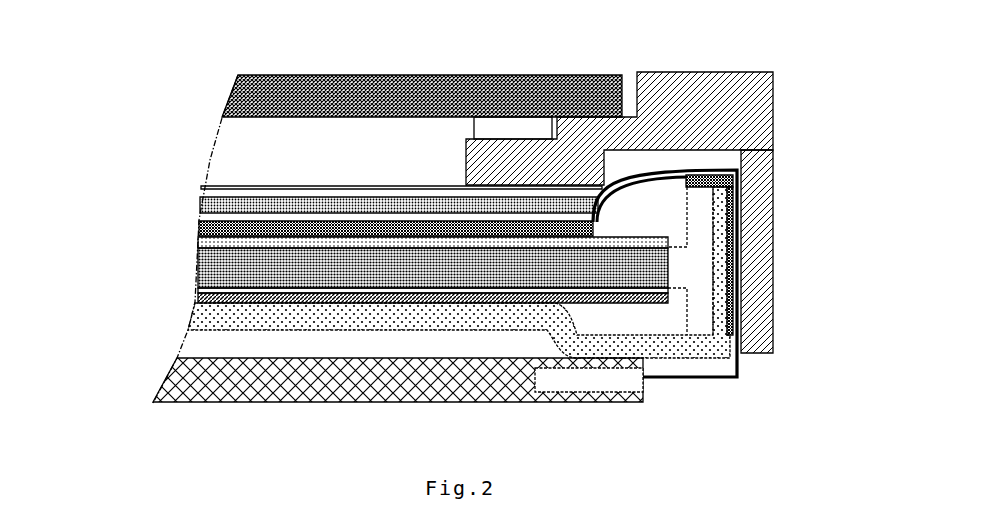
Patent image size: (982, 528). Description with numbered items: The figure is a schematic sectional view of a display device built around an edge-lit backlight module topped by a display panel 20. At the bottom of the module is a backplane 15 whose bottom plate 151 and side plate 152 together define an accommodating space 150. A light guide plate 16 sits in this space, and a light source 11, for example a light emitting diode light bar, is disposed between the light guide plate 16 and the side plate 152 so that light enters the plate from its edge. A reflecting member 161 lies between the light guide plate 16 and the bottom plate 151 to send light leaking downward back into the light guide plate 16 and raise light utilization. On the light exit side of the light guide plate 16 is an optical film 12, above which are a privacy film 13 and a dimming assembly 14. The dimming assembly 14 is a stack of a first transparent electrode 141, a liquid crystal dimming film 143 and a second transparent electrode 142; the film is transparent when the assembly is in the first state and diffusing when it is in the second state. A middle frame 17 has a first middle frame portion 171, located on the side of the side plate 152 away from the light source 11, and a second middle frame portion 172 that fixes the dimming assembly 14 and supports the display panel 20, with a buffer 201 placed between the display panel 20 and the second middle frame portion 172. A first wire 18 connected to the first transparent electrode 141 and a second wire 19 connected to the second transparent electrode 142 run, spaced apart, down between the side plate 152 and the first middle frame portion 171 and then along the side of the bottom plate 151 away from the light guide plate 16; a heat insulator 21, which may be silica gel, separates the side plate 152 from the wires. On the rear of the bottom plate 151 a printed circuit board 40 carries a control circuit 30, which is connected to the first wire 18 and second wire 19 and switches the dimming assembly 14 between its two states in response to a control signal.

The light source 11 is at (690, 261).
The optical film 12 is at (198, 252).
The privacy film 13 is at (198, 233).
The dimming assembly 14 is at (307, 185).
The first transparent electrode 141 is at (200, 218).
The second transparent electrode 142 is at (228, 190).
The liquid crystal dimming film 143 is at (217, 207).
The backplane 15 is at (388, 317).
The accommodating space 150 is at (642, 320).
The bottom plate 151 is at (371, 313).
The side plate 152 is at (720, 320).
The light guide plate 16 is at (198, 284).
The reflecting member 161 is at (198, 297).
The middle frame 17 is at (689, 212).
The first middle frame portion 171 is at (803, 251).
The second middle frame portion 172 is at (730, 98).
The first wire 18 is at (628, 188).
The second wire 19 is at (657, 182).
The display panel 20 is at (358, 75).
The buffer 201 is at (525, 75).
The heat insulator 21 is at (770, 252).
The control circuit 30 is at (575, 380).
The printed circuit board 40 is at (283, 388).